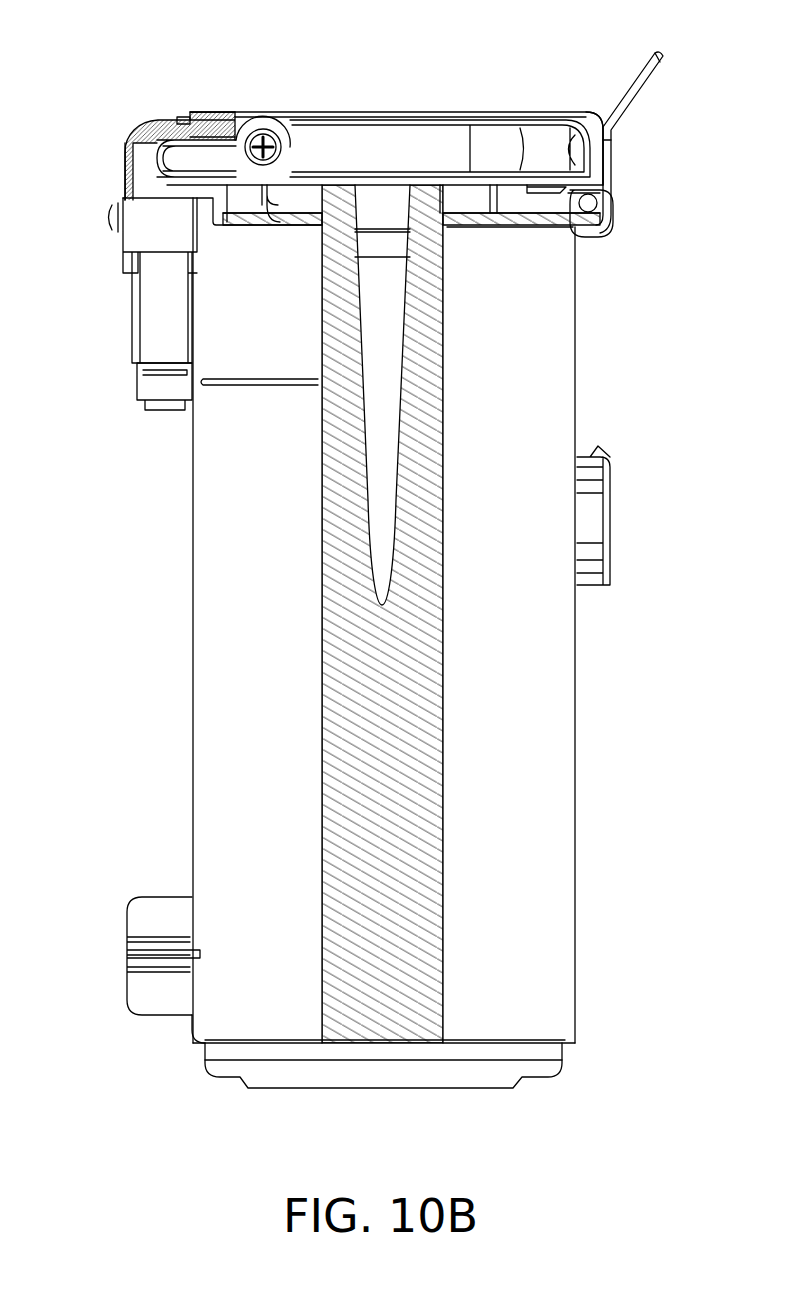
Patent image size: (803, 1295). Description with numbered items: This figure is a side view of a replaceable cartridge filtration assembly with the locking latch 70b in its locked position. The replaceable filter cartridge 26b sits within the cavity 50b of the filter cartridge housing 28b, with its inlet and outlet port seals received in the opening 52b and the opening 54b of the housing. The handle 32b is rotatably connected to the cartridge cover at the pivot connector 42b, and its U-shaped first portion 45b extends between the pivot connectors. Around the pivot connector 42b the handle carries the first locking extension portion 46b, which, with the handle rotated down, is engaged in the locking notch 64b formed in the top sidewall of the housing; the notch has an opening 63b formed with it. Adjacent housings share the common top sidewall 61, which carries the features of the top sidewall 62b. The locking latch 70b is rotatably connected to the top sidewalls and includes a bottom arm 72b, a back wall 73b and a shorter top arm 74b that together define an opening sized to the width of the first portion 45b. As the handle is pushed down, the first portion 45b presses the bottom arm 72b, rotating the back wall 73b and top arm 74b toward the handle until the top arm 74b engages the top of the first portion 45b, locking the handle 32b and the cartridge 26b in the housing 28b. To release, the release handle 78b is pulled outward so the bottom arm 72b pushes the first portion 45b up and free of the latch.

The replaceable filter cartridge 26b is at (362, 100).
The filter cartridge housing 28b is at (590, 322).
The handle 32b is at (462, 110).
The pivot connector 42b is at (263, 122).
The first portion of the handle 45b is at (507, 110).
The first locking extension portion 46b is at (175, 148).
The cavity 50b is at (388, 315).
The opening for inlet port 52b is at (152, 385).
The opening for outlet port 54b is at (152, 325).
The common top sidewall 61 is at (200, 112).
The top sidewall 62b is at (400, 110).
The opening 63b is at (285, 210).
The locking notch 64b is at (148, 148).
The locking latch 70b is at (645, 75).
The bottom arm 72b is at (555, 200).
The back wall 73b is at (608, 140).
The top arm 74b is at (586, 110).
The release handle 78b is at (654, 66).